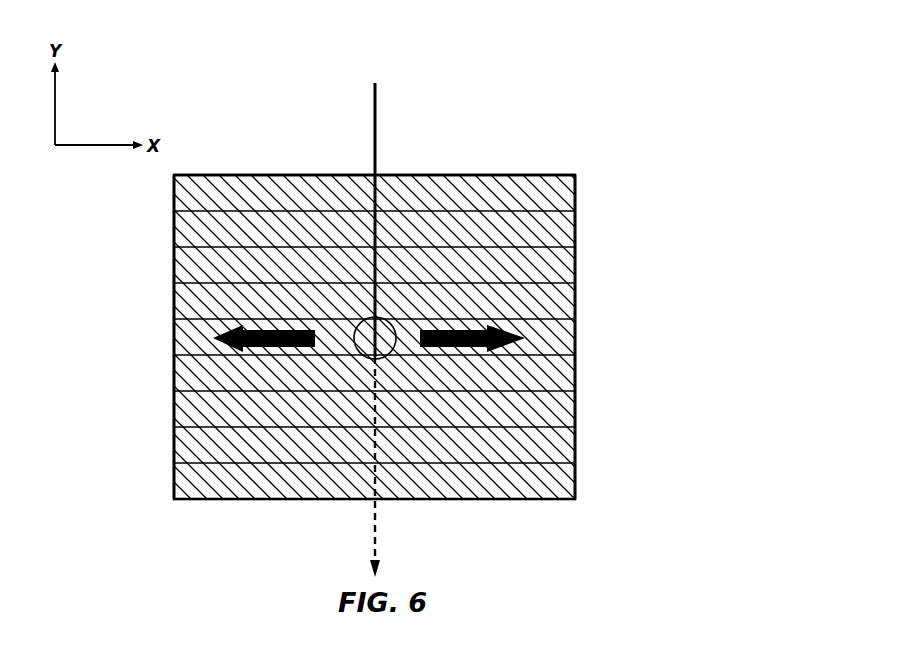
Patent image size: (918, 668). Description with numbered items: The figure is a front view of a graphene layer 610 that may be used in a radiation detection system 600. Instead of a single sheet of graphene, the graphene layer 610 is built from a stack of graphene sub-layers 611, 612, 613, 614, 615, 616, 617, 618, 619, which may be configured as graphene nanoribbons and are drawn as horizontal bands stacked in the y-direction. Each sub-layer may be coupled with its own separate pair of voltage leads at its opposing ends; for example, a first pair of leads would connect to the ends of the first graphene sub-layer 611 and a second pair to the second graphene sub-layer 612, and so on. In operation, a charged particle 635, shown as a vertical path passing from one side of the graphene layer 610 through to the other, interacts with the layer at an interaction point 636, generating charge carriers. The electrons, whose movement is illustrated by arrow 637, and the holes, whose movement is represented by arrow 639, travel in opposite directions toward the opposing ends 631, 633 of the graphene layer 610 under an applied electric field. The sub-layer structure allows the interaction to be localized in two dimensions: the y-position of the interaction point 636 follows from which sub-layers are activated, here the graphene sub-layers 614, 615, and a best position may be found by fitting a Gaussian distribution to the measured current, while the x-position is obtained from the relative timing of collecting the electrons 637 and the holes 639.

The radiation detection system 600 is at (568, 88).
The graphene layer 610 is at (158, 175).
The first graphene sub-layer 611 is at (575, 191).
The second graphene sub-layer 612 is at (575, 227).
The graphene sub-layer 613 is at (575, 263).
The graphene sub-layer 614 is at (575, 299).
The graphene sub-layer 615 is at (575, 335).
The graphene sub-layer 616 is at (575, 371).
The graphene sub-layer 617 is at (575, 407).
The graphene sub-layer 618 is at (575, 443).
The graphene sub-layer 619 is at (575, 479).
The opposing end 631 is at (577, 500).
The opposing end 633 is at (172, 498).
The charged particle 635 is at (375, 127).
The interaction point 636 is at (375, 338).
The arrow representing electron movement 637 is at (455, 330).
The arrow representing hole movement 639 is at (273, 330).